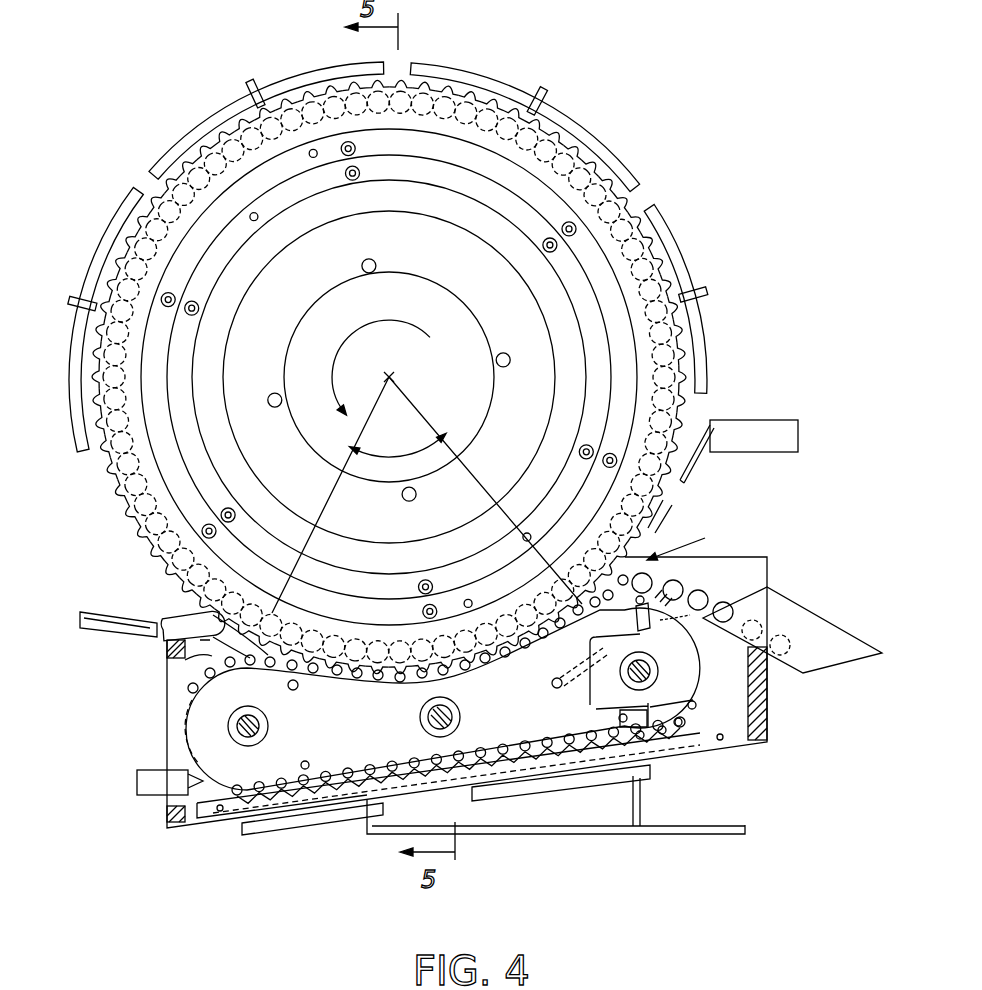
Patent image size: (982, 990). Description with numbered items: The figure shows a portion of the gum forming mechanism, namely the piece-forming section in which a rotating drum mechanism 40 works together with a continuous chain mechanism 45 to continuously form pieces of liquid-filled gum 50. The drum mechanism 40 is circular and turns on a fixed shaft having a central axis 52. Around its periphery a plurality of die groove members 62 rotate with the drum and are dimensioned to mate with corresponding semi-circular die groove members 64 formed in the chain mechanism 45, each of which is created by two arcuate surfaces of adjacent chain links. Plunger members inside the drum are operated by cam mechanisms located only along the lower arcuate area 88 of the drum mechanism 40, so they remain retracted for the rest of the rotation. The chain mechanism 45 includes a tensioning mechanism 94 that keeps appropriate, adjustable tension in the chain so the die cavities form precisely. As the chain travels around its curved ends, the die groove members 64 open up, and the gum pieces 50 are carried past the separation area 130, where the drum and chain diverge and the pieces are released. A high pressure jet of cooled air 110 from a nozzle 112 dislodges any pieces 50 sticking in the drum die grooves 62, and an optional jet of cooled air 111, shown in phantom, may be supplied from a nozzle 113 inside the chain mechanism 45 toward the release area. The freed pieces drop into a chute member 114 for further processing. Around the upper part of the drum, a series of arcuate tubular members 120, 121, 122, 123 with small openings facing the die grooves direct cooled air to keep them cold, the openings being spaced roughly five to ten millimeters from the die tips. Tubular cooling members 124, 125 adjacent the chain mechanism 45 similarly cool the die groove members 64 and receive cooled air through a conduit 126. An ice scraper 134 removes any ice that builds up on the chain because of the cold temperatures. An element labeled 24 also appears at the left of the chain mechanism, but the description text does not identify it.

The feed rod 24 is at (98, 612).
The rotating drum mechanism 40 is at (195, 494).
The continuous chain mechanism 45 is at (166, 748).
The pieces of liquid-filled gum 50 is at (727, 603).
The central axis 52 is at (395, 377).
The die groove members 62 is at (378, 652).
The semi-circular die groove members 64 is at (207, 657).
The lower arcuate area 88 is at (400, 460).
The tensioning mechanism 94 is at (696, 705).
The jet of cooled air 110 is at (662, 528).
The jet of cooled air 111 is at (668, 612).
The nozzle 112 is at (770, 423).
The nozzle 113 is at (580, 678).
The chute member 114 is at (805, 673).
The arcuate tubular member 120 is at (118, 218).
The arcuate tubular member 121 is at (195, 128).
The arcuate tubular member 122 is at (595, 138).
The arcuate tubular member 123 is at (682, 252).
The tubular cooling member 124 is at (305, 822).
The tubular cooling member 125 is at (652, 772).
The conduit 126 is at (573, 835).
The separation area 130 is at (706, 537).
The ice scraper 134 is at (152, 795).